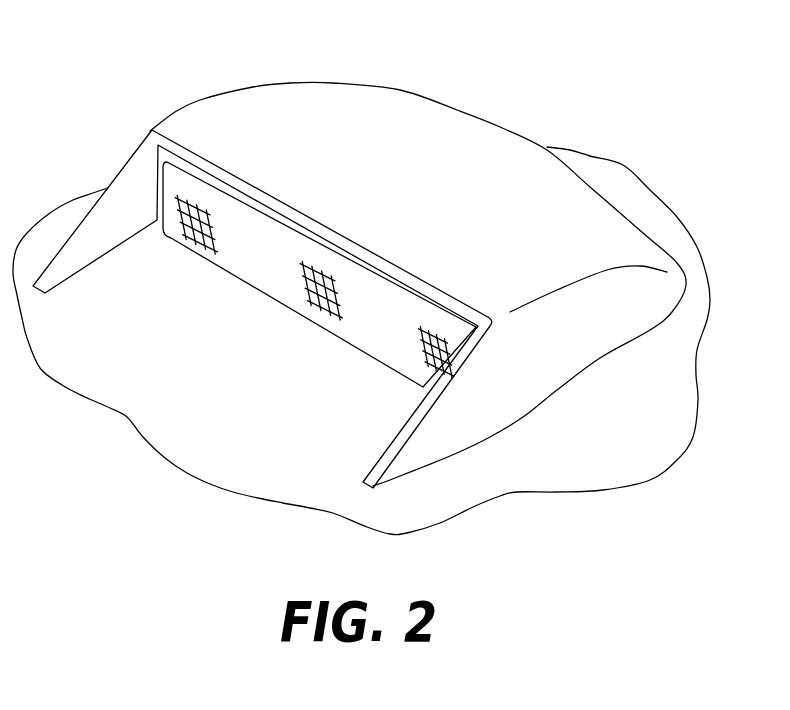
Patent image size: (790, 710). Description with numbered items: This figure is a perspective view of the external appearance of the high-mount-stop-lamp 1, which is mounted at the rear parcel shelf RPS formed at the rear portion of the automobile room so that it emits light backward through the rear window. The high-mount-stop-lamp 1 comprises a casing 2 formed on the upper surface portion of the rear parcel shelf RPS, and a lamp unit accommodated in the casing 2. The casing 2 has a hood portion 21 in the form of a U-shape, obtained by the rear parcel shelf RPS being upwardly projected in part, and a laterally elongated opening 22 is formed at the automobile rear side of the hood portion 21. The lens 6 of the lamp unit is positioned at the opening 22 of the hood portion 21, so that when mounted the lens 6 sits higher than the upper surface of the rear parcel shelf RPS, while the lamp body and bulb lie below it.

The high-mount-stop-lamp 1 is at (359, 247).
The casing 2 is at (253, 105).
The hood portion 21 is at (570, 197).
The opening 22 is at (160, 182).
The lens 6 is at (262, 277).
The rear parcel shelf RPS is at (517, 493).